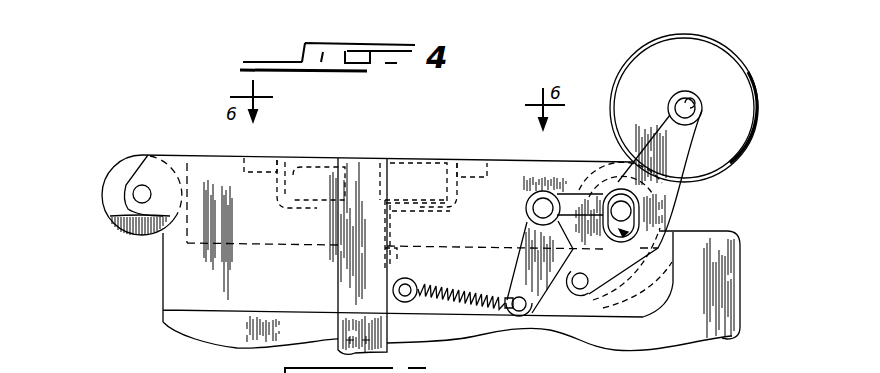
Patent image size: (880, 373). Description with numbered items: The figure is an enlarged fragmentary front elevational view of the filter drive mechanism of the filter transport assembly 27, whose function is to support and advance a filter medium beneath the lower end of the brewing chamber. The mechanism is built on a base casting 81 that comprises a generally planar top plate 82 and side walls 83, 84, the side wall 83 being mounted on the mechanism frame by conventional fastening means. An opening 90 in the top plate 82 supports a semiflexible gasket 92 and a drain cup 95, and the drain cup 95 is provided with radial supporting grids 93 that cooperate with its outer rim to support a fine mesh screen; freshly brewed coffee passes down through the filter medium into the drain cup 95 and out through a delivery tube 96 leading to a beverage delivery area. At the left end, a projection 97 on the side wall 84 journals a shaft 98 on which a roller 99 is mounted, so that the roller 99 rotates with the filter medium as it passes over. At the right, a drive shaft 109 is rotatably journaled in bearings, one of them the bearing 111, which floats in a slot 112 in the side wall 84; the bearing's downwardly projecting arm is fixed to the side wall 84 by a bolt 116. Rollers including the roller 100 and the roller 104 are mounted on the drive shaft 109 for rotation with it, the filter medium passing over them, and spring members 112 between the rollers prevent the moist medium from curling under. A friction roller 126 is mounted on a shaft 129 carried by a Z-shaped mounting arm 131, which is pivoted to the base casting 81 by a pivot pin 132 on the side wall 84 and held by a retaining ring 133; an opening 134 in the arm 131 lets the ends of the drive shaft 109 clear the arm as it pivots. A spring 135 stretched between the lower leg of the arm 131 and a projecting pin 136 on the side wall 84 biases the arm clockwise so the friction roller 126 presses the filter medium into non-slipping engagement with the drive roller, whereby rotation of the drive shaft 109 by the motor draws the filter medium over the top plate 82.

The filter transport assembly 27 is at (72, 92).
The base casting 81 is at (162, 283).
The top plate 82 is at (203, 155).
The side wall 83 is at (708, 325).
The side wall 84 is at (217, 295).
The opening 90 is at (377, 165).
The semiflexible gasket 92 is at (267, 150).
The radial supporting grids 93 is at (315, 183).
The drain cup 95 is at (303, 207).
The delivery tube 96 is at (347, 322).
The projection 97 is at (147, 177).
The shaft 98 is at (140, 197).
The roller 99 is at (120, 177).
The roller 100 is at (640, 207).
The roller 104 is at (690, 172).
The drive shaft 109 is at (625, 213).
The bearing 111 is at (700, 194).
The slot 112 is at (650, 288).
The bolt 116 is at (587, 297).
The friction roller 126 is at (690, 47).
The shaft 129 is at (688, 107).
The Z-shaped mounting arm 131 is at (677, 148).
The pivot pin 132 is at (547, 191).
The retaining ring 133 is at (522, 212).
The opening 134 is at (675, 238).
The spring 135 is at (446, 297).
The projecting pin 136 is at (412, 285).